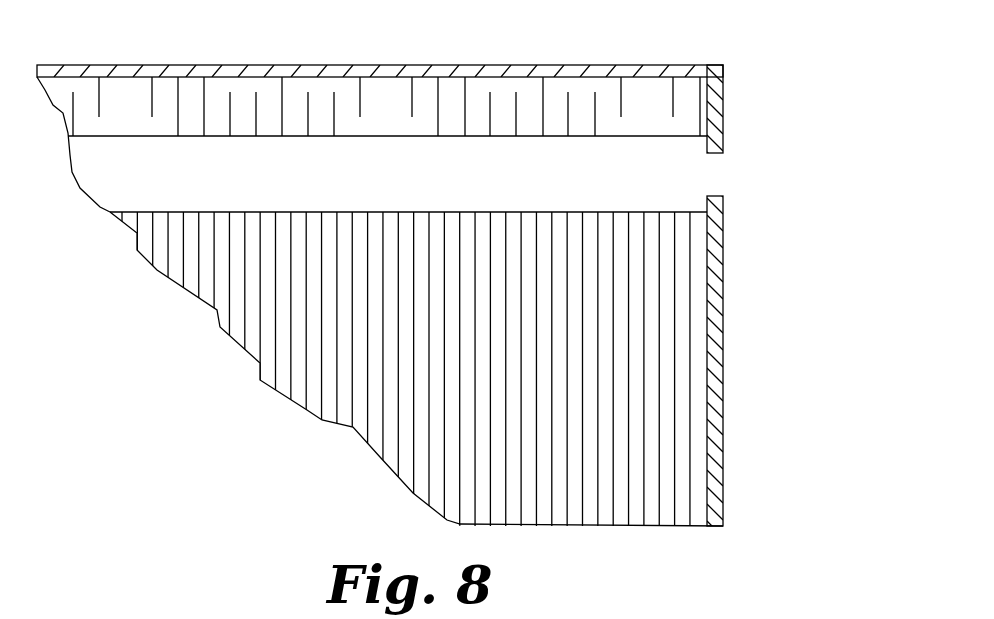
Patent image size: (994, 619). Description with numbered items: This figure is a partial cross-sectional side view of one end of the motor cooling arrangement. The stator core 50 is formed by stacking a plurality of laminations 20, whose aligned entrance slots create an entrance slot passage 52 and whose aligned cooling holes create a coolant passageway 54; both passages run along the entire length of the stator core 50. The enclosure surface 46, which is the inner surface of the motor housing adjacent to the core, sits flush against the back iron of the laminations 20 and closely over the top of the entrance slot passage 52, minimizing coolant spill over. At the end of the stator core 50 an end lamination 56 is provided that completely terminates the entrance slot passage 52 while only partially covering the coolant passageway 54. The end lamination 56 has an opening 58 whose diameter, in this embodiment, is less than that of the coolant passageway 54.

The lamination 20 is at (650, 473).
The enclosure surface 46 is at (362, 66).
The stator core 50 is at (243, 391).
The entrance slot passage 52 is at (482, 112).
The coolant passageway 54 is at (252, 173).
The end lamination 56 is at (717, 100).
The opening 58 is at (723, 173).